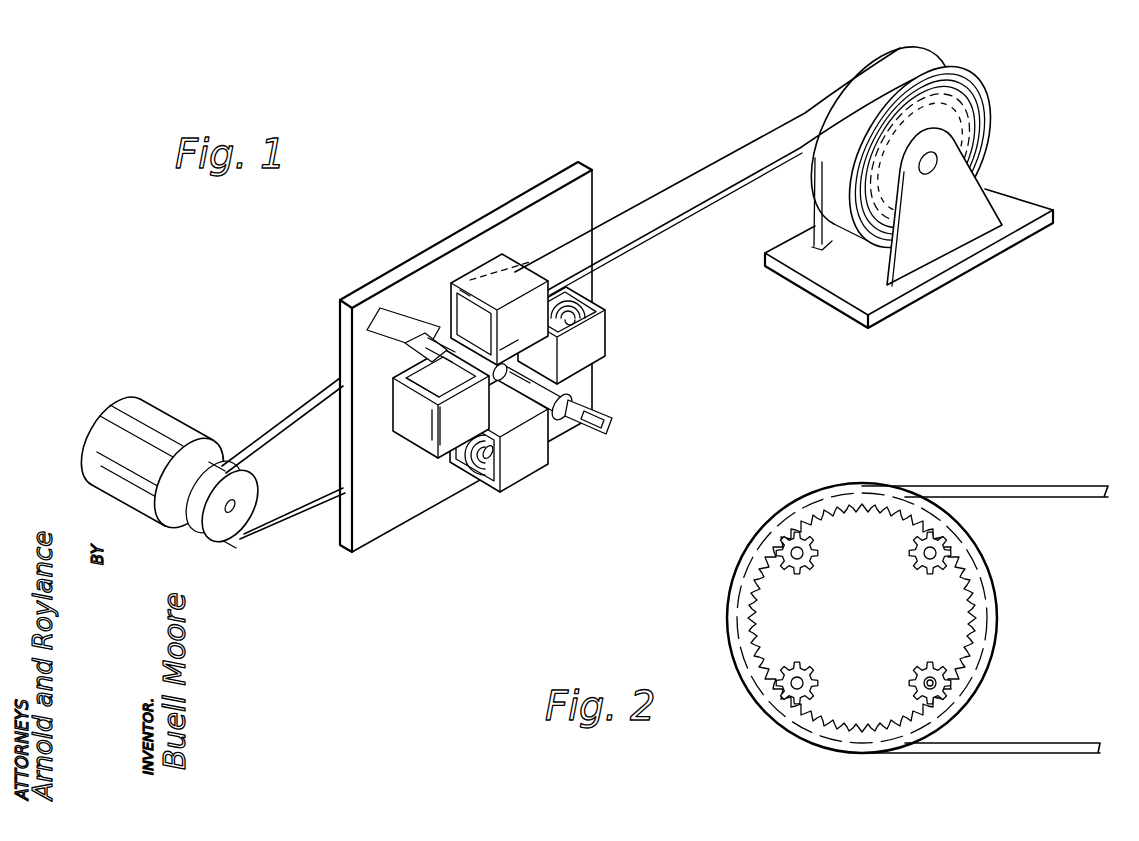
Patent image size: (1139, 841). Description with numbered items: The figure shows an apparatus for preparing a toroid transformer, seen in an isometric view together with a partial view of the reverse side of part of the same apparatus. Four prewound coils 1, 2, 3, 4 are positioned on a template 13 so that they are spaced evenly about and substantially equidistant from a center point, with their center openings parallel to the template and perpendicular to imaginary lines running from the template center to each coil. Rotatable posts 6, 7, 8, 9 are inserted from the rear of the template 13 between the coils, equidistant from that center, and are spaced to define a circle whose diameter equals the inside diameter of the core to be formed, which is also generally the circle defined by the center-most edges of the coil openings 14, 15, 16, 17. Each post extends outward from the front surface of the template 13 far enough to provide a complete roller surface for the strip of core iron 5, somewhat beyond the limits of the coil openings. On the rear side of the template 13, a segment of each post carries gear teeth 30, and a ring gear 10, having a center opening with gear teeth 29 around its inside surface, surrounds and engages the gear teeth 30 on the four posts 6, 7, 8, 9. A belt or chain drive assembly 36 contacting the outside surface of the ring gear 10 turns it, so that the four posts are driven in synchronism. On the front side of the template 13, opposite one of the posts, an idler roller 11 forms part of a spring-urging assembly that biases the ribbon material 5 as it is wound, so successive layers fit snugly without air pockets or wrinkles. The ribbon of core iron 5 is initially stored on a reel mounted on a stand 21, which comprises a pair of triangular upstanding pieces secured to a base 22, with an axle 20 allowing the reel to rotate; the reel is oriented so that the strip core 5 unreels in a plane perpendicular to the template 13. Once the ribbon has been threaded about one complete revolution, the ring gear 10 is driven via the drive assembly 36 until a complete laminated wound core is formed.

In FIG. 1, the prewound coil 1 is at (605, 325).
In FIG. 1, the prewound coil 2 is at (471, 421).
In FIG. 1, the prewound coil 3 is at (543, 317).
In FIG. 1, the prewound coil 4 is at (545, 450).
In FIG. 1, the strip of core iron 5 is at (698, 180).
In FIG. 1, the rotatable post 6 is at (567, 318).
In FIG. 2, the rotatable post 6 is at (818, 583).
In FIG. 1, the rotatable post 7 is at (509, 332).
In FIG. 2, the rotatable post 7 is at (915, 582).
In FIG. 1, the rotatable post 8 is at (493, 454).
In FIG. 2, the rotatable post 8 is at (900, 694).
In FIG. 1, the rotatable post 9 is at (562, 414).
In FIG. 2, the rotatable post 9 is at (814, 659).
In FIG. 2, the ring gear 10 is at (985, 565).
In FIG. 1, the idler roller 11 is at (438, 332).
In FIG. 1, the template 13 is at (548, 180).
In FIG. 1, the coil opening 14 is at (575, 296).
In FIG. 1, the coil opening 15 is at (470, 285).
In FIG. 1, the coil opening 16 is at (407, 394).
In FIG. 1, the coil opening 17 is at (474, 485).
In FIG. 1, the axle 20 is at (936, 176).
In FIG. 1, the stand 21 is at (973, 196).
In FIG. 1, the base 22 is at (1037, 230).
In FIG. 2, the gear teeth 29 is at (968, 603).
In FIG. 2, the gear teeth 30 is at (924, 670).
In FIG. 1, the drive assembly 36 is at (297, 413).
In FIG. 2, the drive assembly 36 is at (1057, 484).